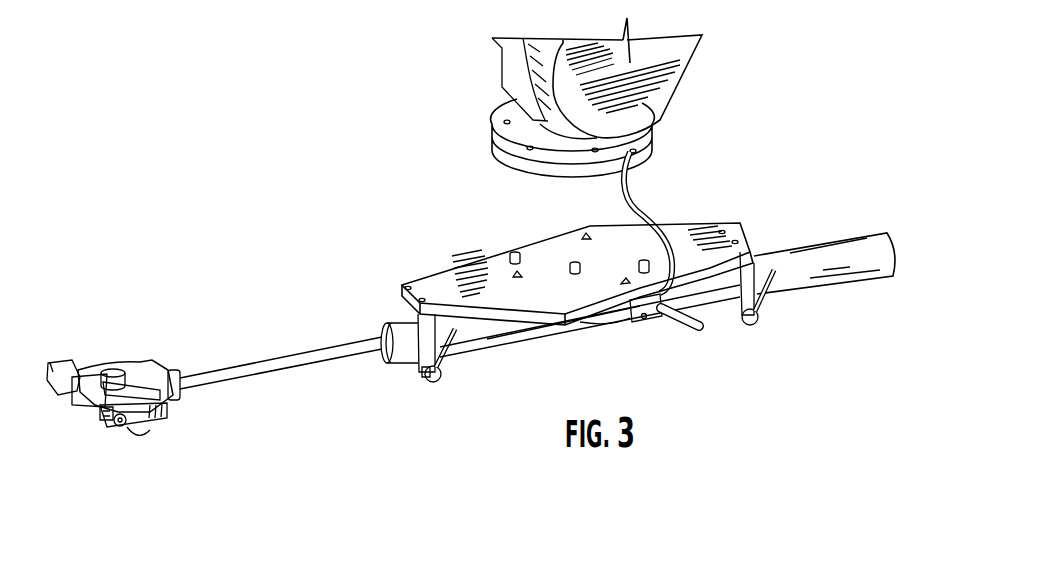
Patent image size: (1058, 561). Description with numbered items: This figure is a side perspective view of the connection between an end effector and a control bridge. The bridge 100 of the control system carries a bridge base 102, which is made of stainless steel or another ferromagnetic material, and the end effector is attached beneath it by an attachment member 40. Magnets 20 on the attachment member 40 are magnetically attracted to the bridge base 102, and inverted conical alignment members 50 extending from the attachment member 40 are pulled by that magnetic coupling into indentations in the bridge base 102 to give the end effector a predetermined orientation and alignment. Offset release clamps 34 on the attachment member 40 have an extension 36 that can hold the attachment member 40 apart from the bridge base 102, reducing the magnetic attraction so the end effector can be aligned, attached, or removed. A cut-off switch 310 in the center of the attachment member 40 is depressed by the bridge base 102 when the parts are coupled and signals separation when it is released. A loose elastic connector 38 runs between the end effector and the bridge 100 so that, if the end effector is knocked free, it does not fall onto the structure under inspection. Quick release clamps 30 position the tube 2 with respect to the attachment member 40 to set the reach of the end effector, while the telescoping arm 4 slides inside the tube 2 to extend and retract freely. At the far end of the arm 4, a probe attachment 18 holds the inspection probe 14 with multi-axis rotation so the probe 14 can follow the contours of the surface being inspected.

The tube 2 is at (847, 252).
The telescoping arm 4 is at (307, 353).
The inspection probe 14 is at (107, 403).
The probe attachment 18 is at (180, 396).
The magnets 20 is at (607, 314).
The quick release clamps 30 is at (435, 383).
The offset release clamps 34 is at (692, 333).
The extension 36 is at (505, 250).
The connector 38 is at (641, 216).
The attachment member 40 is at (422, 285).
The alignment members 50 is at (586, 243).
The bridge 100 is at (668, 68).
The bridge base 102 is at (497, 127).
The cut-off switch 310 is at (567, 257).